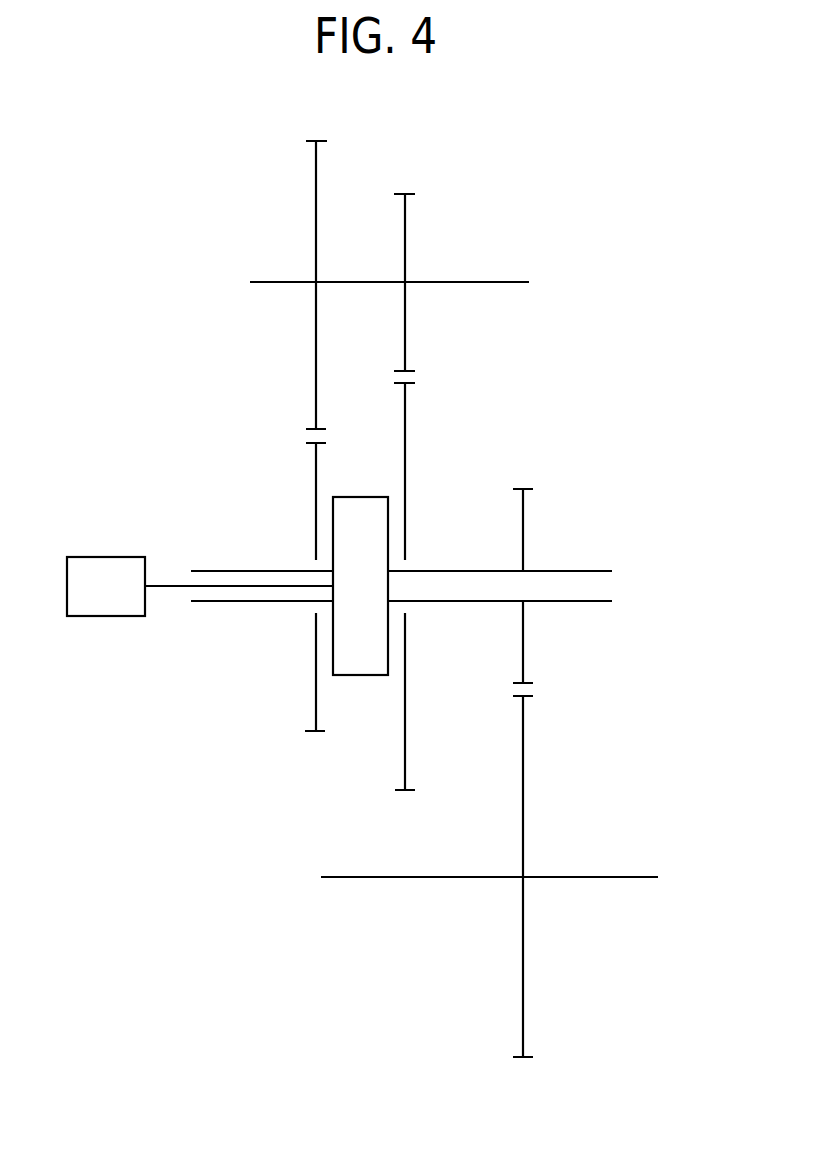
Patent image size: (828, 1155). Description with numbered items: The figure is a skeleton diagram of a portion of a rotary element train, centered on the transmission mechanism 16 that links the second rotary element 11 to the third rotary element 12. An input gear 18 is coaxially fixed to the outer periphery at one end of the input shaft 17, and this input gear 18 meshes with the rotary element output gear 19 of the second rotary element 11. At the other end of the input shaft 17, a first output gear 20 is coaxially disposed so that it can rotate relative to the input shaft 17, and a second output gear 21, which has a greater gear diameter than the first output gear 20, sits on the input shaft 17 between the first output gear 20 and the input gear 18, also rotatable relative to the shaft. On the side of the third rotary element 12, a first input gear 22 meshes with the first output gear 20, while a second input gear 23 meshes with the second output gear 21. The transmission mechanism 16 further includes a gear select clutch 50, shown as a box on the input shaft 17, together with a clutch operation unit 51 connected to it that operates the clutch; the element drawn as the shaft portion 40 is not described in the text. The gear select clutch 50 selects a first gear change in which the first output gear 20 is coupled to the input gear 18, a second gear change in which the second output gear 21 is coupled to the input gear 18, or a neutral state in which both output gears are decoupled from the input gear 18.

The second rotary element 11 is at (620, 853).
The third rotary element 12 is at (480, 258).
The transmission mechanism 16 is at (579, 513).
The input shaft 17 is at (585, 570).
The input gear 18 is at (522, 528).
The rotary element output gear 19 is at (524, 762).
The first output gear 20 is at (315, 490).
The second output gear 21 is at (406, 427).
The first input gear 22 is at (315, 347).
The second input gear 23 is at (406, 322).
The rotor shaft 40 is at (240, 588).
The gear select clutch 50 is at (360, 652).
The clutch operation unit 51 is at (115, 595).